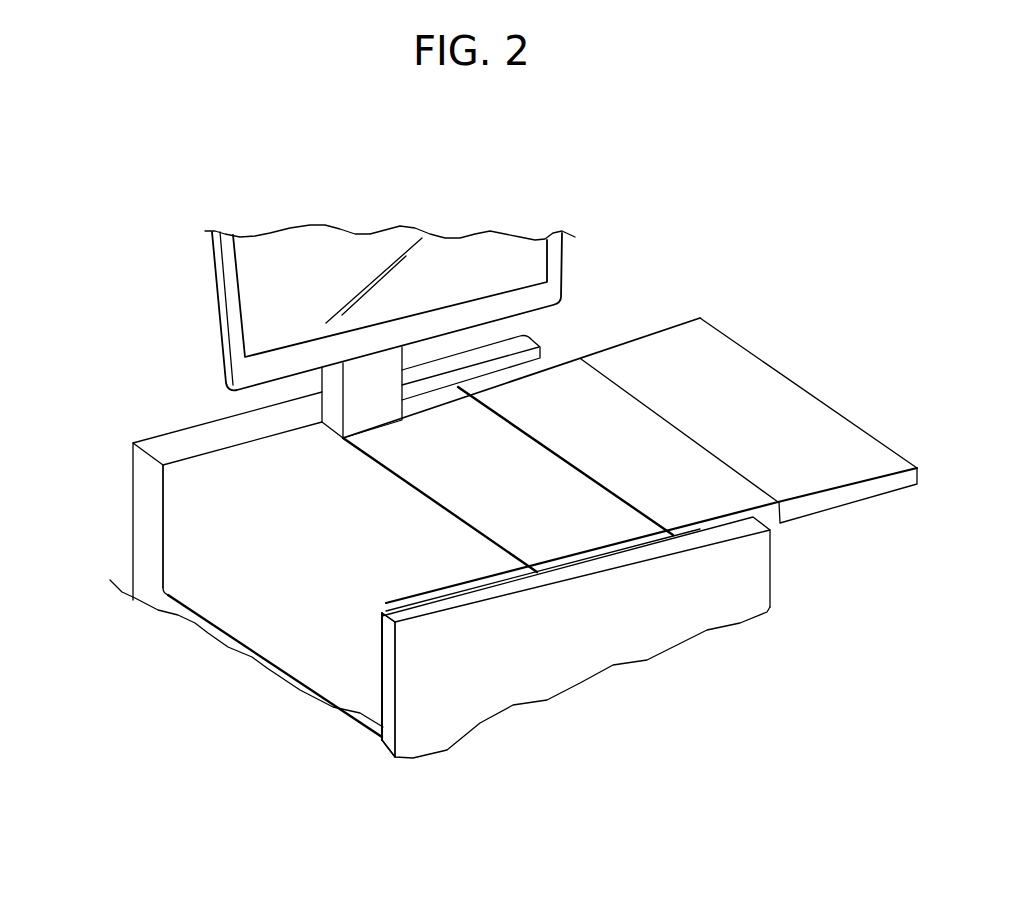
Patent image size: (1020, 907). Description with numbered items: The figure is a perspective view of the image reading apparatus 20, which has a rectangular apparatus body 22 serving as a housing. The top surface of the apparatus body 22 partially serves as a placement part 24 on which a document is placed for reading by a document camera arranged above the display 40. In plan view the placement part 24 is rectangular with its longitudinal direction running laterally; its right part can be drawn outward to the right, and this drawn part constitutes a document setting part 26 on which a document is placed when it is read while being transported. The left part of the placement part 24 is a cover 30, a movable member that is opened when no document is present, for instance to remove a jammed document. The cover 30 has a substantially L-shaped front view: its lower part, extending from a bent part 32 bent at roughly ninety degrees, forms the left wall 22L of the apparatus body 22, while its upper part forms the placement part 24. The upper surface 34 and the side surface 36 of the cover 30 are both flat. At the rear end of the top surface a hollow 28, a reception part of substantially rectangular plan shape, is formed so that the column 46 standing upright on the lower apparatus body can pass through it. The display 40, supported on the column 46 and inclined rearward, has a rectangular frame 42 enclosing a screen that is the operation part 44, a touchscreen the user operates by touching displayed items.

The image reading apparatus 20 is at (116, 467).
The apparatus body 22 is at (468, 687).
The left wall 22L is at (147, 517).
The placement part 24 is at (496, 565).
The document setting part 26 is at (752, 392).
The hollow 28 is at (460, 418).
The cover 30 is at (292, 653).
The bent part 32 is at (200, 493).
The upper surface 34 is at (383, 645).
The side surface 36 is at (223, 597).
The display 40 is at (210, 293).
The frame 42 is at (237, 353).
The operation part 44 is at (312, 255).
The column 46 is at (370, 400).